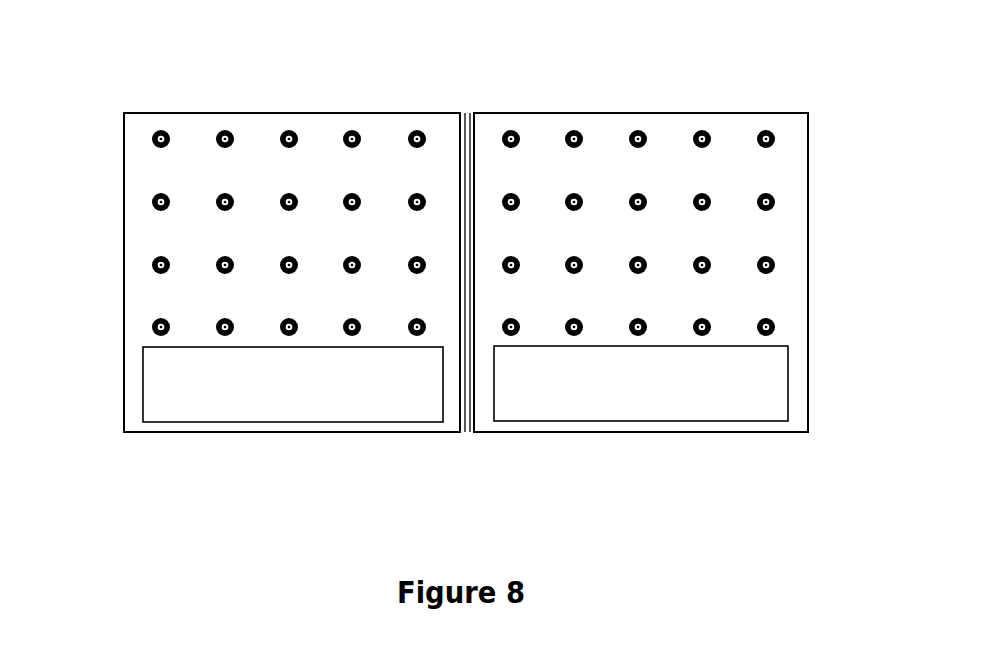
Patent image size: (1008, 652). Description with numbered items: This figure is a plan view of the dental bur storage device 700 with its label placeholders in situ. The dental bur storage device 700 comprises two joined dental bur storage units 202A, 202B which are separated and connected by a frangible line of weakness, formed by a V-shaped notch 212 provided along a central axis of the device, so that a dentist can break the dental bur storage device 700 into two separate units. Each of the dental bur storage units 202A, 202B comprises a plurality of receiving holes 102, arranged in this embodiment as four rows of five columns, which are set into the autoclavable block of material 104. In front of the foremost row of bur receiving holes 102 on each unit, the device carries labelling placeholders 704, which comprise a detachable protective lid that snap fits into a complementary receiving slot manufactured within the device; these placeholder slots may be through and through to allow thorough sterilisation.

The dental bur storage device 700 is at (140, 82).
The autoclavable block of material 104 is at (325, 143).
The receiving holes 102 is at (222, 268).
The V-shaped notch 212 is at (467, 137).
The labelling placeholders 704 is at (319, 395).
The first panel section 202A is at (246, 466).
The second panel section 202B is at (656, 455).